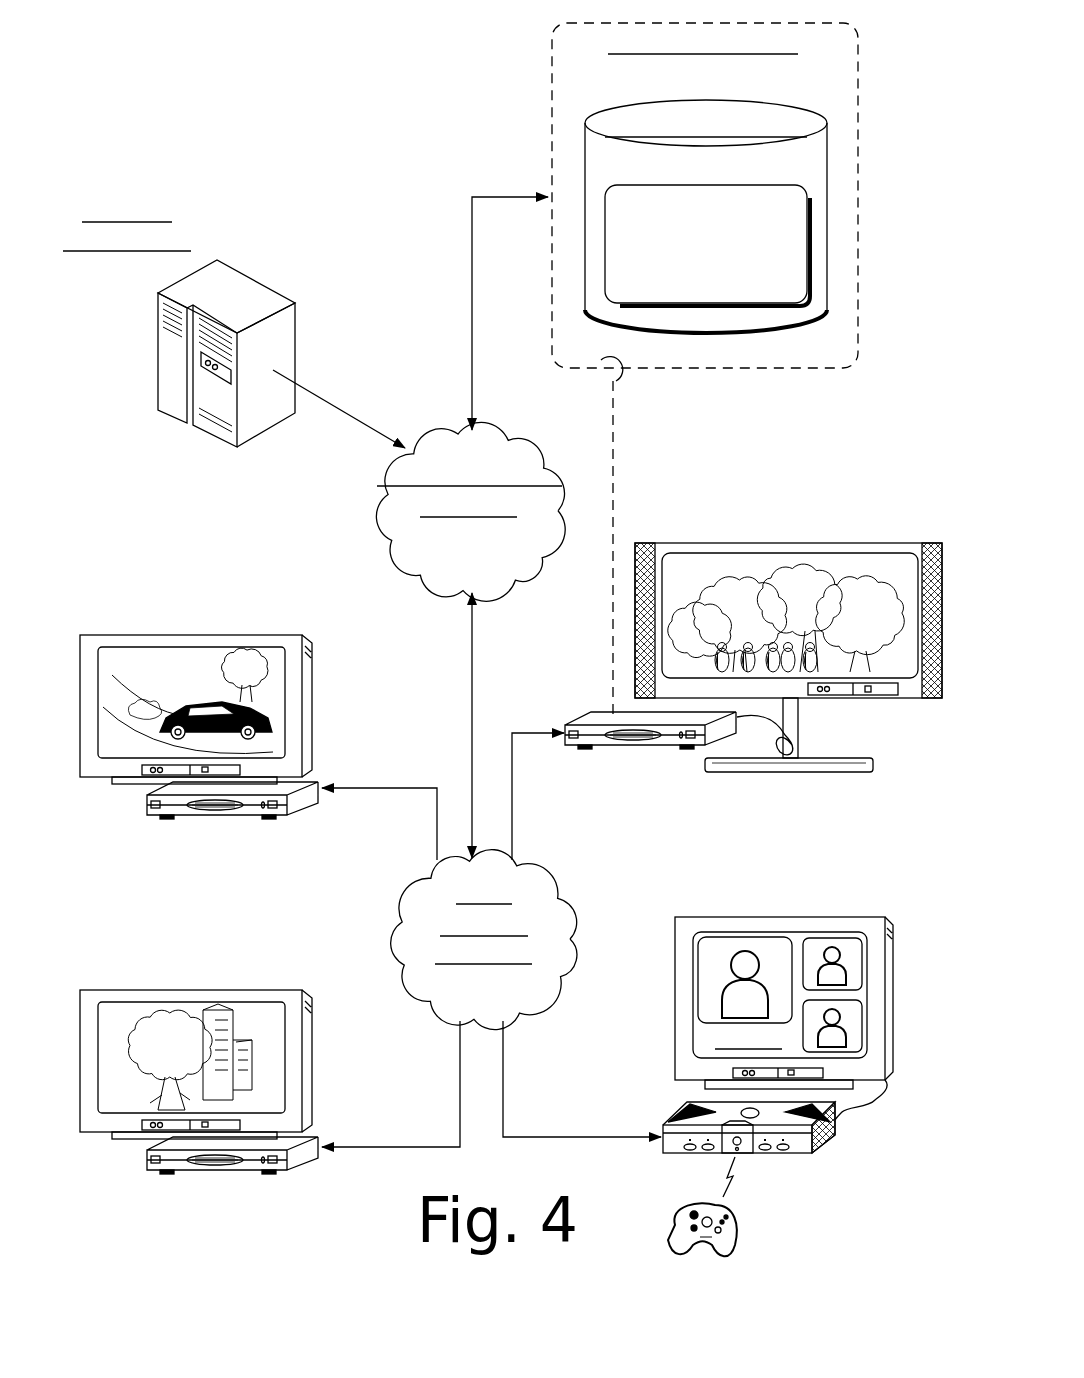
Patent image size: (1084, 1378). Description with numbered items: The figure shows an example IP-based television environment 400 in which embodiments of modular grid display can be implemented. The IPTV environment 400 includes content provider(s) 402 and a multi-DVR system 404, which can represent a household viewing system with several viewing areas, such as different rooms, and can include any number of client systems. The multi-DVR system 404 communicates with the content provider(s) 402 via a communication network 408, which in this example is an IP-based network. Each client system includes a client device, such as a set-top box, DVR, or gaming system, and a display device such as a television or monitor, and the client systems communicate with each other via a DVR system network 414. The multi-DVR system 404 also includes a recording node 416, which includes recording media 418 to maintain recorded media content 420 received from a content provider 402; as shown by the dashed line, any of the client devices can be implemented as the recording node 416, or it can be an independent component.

The IPTV environment 400 is at (242, 112).
The content provider(s) 402 is at (103, 282).
The multi-DVR system 404 is at (693, 452).
The communication network 408 is at (443, 566).
The DVR system network 414 is at (461, 1004).
The recording node 416 is at (680, 84).
The recording media 418 is at (680, 167).
The recorded media content 420 is at (680, 281).